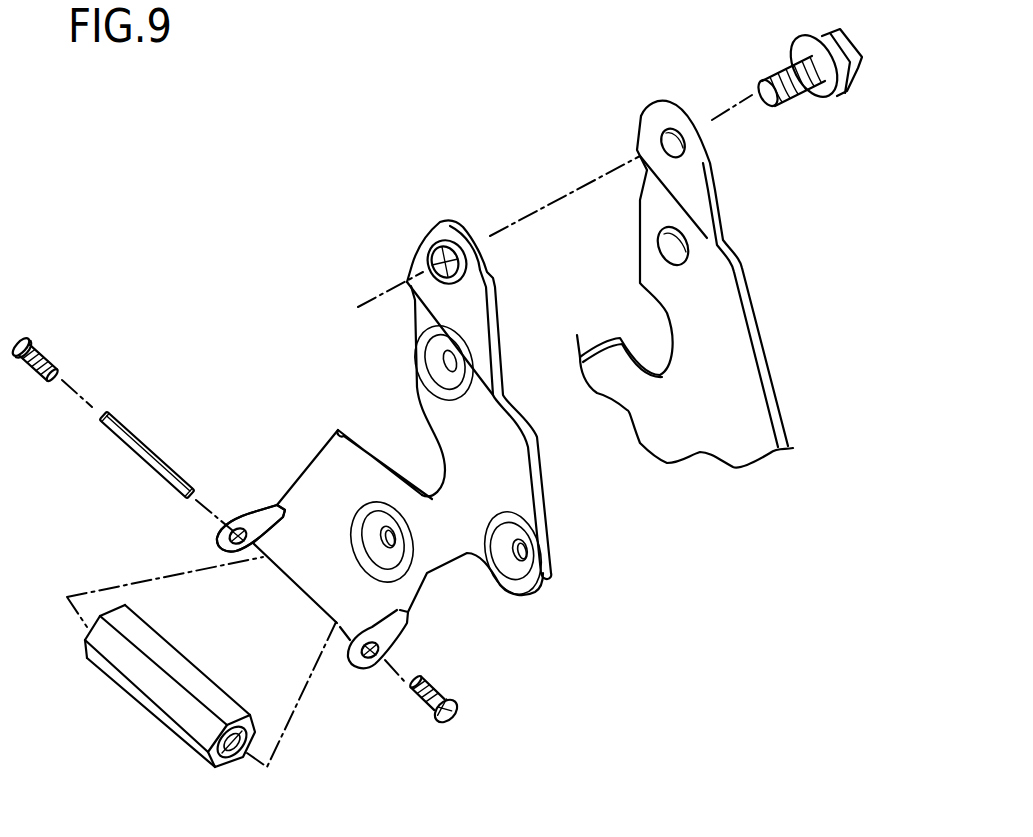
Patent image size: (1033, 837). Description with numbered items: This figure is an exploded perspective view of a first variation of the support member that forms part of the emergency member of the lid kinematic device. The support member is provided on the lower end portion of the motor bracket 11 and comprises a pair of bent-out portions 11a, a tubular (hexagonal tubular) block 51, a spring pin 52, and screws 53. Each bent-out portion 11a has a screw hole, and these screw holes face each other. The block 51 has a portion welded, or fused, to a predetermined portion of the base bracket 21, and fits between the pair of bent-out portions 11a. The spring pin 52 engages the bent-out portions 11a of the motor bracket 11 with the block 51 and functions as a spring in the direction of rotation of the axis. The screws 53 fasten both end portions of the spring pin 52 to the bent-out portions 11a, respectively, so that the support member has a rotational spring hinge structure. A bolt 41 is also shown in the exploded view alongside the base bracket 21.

The motor bracket 11 is at (507, 494).
The bent-out portions 11a is at (256, 516).
The base bracket 21 is at (713, 312).
The bolt 41 is at (773, 72).
The block 51 is at (113, 677).
The spring pin 52 is at (137, 435).
The screws 53 is at (42, 352).